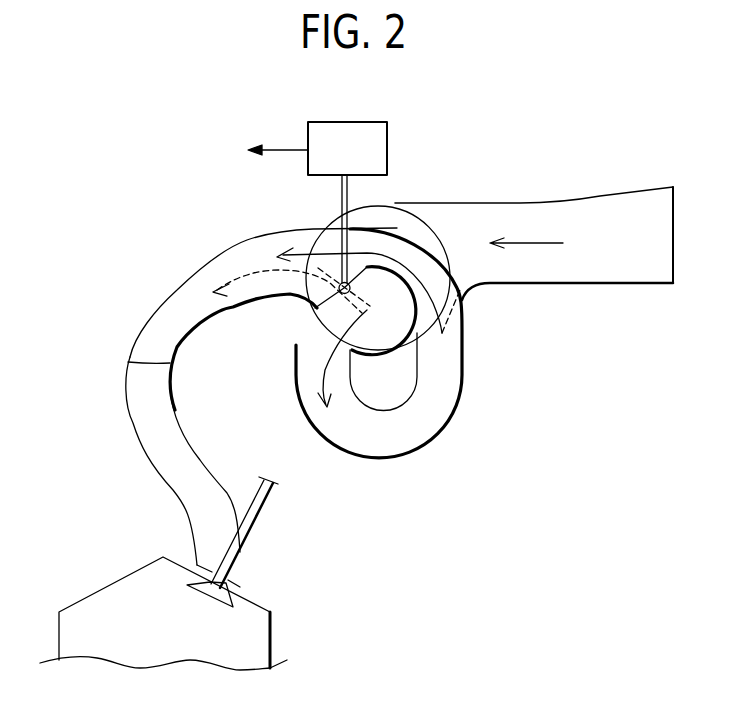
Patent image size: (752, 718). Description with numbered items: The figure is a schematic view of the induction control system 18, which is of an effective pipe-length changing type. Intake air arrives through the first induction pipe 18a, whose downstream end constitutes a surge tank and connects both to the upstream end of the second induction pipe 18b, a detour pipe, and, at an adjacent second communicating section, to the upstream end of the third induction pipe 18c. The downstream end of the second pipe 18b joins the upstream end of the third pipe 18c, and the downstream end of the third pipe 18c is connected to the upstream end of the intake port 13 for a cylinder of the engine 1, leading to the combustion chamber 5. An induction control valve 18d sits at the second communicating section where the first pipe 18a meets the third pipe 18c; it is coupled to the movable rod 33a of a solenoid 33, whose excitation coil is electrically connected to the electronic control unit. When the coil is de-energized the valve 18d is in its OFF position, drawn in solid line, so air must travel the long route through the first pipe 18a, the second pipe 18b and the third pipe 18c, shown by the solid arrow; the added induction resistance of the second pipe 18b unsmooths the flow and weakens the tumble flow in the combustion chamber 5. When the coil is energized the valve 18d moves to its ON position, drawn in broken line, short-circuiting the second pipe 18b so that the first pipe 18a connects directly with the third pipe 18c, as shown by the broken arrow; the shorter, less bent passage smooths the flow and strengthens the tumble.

The engine 1 is at (92, 592).
The combustion chamber 5 is at (247, 623).
The intake port 13 is at (135, 417).
The induction control system 18 is at (476, 350).
The first induction pipe 18a is at (512, 208).
The second induction pipe 18b is at (408, 435).
The third induction pipe 18c is at (253, 252).
The induction control valve 18d is at (335, 300).
The solenoid 33 is at (390, 124).
The movable rod 33a is at (338, 200).